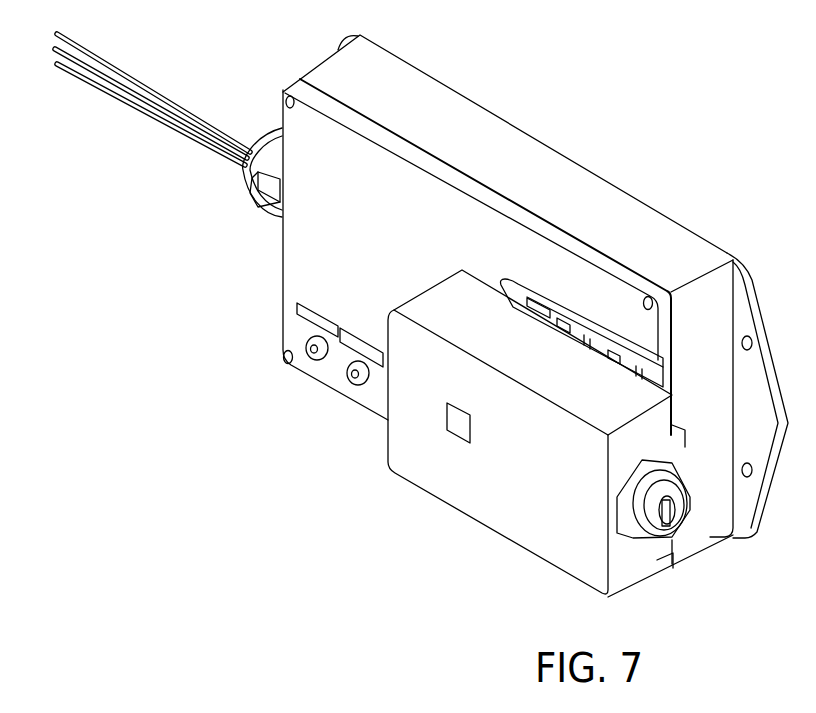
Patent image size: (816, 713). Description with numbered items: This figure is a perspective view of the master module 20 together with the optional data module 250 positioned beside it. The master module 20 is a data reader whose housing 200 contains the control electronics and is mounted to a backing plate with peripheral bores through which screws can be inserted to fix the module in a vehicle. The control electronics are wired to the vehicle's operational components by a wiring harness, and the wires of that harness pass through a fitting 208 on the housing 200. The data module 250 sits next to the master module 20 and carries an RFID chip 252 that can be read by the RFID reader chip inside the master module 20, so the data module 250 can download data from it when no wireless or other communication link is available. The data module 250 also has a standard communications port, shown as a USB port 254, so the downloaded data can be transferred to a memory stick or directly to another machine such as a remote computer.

The master module 20 is at (252, 72).
The housing 200 is at (299, 256).
The fitting 208 is at (247, 183).
The data module 250 is at (529, 332).
The RFID chip 252 is at (452, 423).
The USB port 254 is at (670, 533).